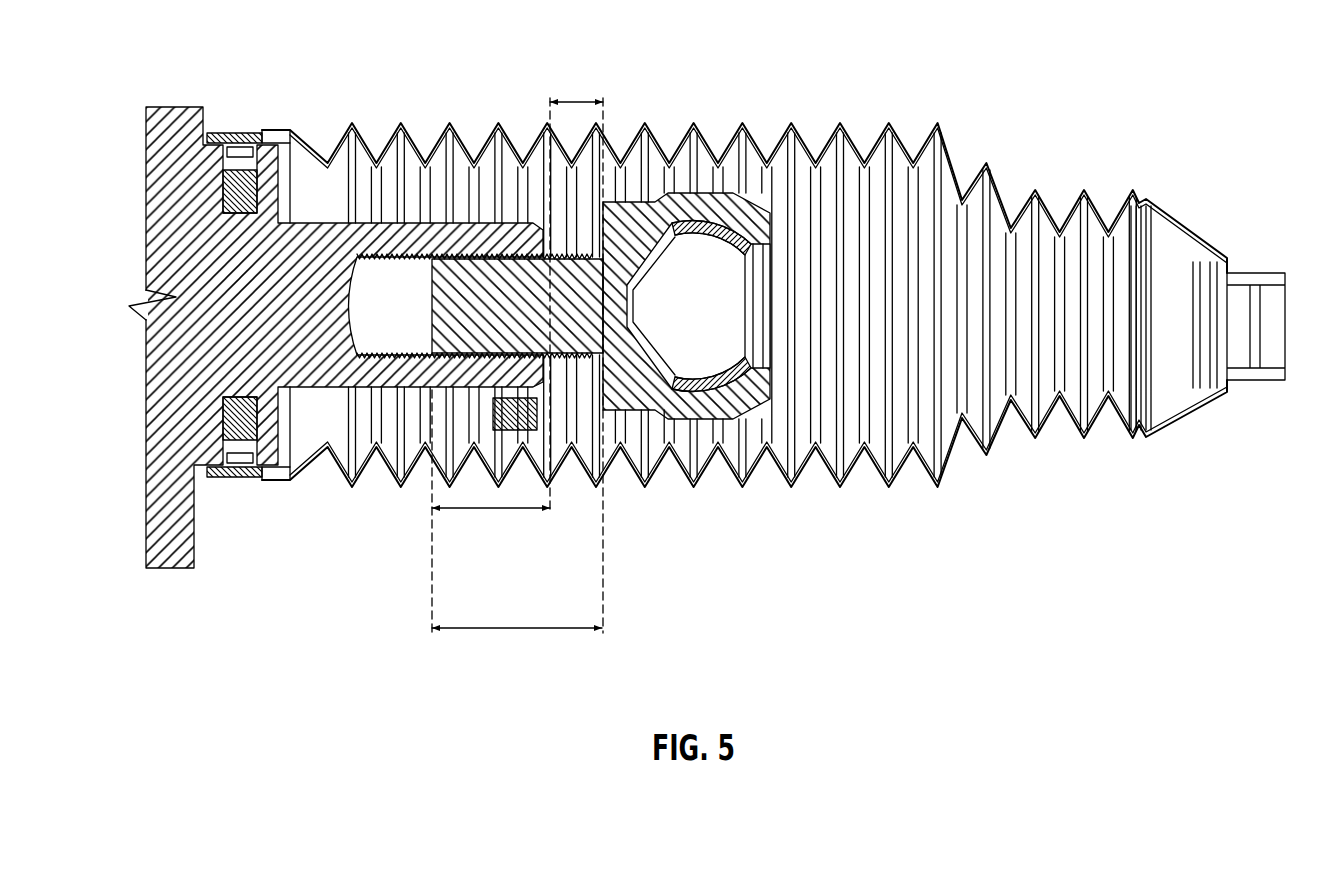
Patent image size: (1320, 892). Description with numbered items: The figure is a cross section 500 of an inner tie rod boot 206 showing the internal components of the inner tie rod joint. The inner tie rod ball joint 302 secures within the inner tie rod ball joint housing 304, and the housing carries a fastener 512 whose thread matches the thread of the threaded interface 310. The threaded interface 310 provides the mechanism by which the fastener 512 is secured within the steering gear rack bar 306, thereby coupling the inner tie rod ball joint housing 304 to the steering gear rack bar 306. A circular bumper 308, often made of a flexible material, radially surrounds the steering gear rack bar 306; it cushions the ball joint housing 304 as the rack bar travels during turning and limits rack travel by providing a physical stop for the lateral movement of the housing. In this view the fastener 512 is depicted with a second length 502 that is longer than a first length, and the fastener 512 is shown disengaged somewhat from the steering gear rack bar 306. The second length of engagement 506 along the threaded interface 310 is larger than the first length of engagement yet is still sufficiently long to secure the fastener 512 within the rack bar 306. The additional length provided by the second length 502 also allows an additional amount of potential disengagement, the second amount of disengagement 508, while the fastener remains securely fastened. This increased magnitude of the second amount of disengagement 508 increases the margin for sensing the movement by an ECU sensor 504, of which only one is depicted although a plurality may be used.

The actuator assembly 500 is at (1100, 50).
The bellows boot 206 is at (822, 490).
The inner tie rod ball joint 302 is at (715, 250).
The inner tie rod ball joint housing 304 is at (632, 217).
The steering gear rack bar 306 is at (310, 387).
The circular bumper 308 is at (227, 150).
The threaded interface 310 is at (472, 257).
The second length 502 is at (580, 335).
The ECU sensor 504 is at (533, 427).
The second length of engagement 506 is at (510, 512).
The second amount of disengagement 508 is at (575, 100).
The fastener 512 is at (515, 630).